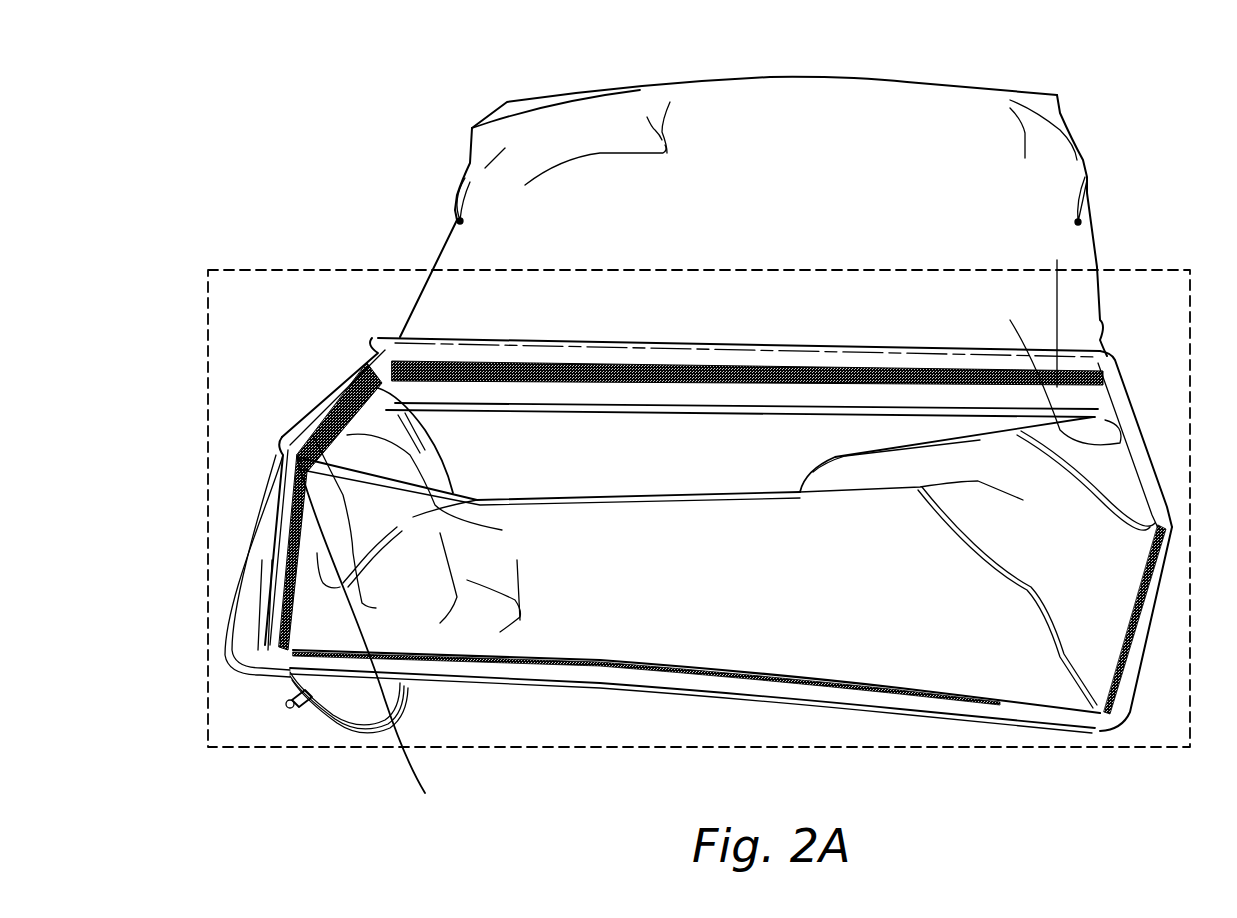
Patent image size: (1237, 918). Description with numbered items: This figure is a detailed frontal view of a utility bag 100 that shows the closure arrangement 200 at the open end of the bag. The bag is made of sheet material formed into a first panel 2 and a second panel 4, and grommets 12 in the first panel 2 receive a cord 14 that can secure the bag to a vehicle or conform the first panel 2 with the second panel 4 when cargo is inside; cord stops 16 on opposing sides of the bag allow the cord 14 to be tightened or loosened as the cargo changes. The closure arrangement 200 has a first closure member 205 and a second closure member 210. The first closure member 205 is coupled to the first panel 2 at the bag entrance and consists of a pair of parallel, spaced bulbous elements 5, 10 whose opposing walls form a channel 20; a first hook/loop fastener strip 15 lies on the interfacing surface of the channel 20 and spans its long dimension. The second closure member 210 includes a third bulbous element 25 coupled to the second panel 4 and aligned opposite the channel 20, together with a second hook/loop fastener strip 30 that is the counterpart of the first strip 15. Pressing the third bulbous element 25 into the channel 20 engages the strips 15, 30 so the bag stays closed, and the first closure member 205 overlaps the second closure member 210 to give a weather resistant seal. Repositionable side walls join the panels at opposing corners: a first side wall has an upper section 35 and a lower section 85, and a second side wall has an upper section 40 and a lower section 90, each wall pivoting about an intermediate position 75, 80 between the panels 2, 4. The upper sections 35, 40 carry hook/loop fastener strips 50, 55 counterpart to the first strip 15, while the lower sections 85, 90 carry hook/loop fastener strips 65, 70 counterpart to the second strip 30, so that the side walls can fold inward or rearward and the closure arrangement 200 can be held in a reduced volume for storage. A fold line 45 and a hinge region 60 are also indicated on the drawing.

The utility bag 100 is at (428, 124).
The first panel 2 is at (796, 191).
The second panel 4 is at (788, 617).
The first bulbous element 5 is at (555, 352).
The second bulbous element 10 is at (773, 400).
The grommets 12 is at (450, 220).
The cord 14 is at (455, 190).
The first hook/loop fastener strip 15 is at (647, 372).
The cord stops 16 is at (285, 707).
The channel 20 is at (510, 298).
The third bulbous element 25 is at (900, 698).
The second hook/loop fastener strip 30 is at (583, 657).
The upper section of first side wall 35 is at (330, 372).
The upper section of second side wall 40 is at (1130, 433).
The fold 45 is at (423, 533).
The hook/loop fastener strip 50 is at (1010, 320).
The hook/loop fastener strip 55 is at (457, 493).
The cover hinge 60 is at (1057, 260).
The hook/loop fastener strip 65 is at (1120, 642).
The hook/loop fastener strip 70 is at (376, 626).
The intermediate position 75 is at (1140, 533).
The intermediate position 80 is at (361, 528).
The lower section of first side wall 85 is at (268, 538).
The lower section of second side wall 90 is at (1140, 633).
The closure arrangement 200 is at (723, 748).
The first closure member 205 is at (785, 478).
The second closure member 210 is at (652, 745).